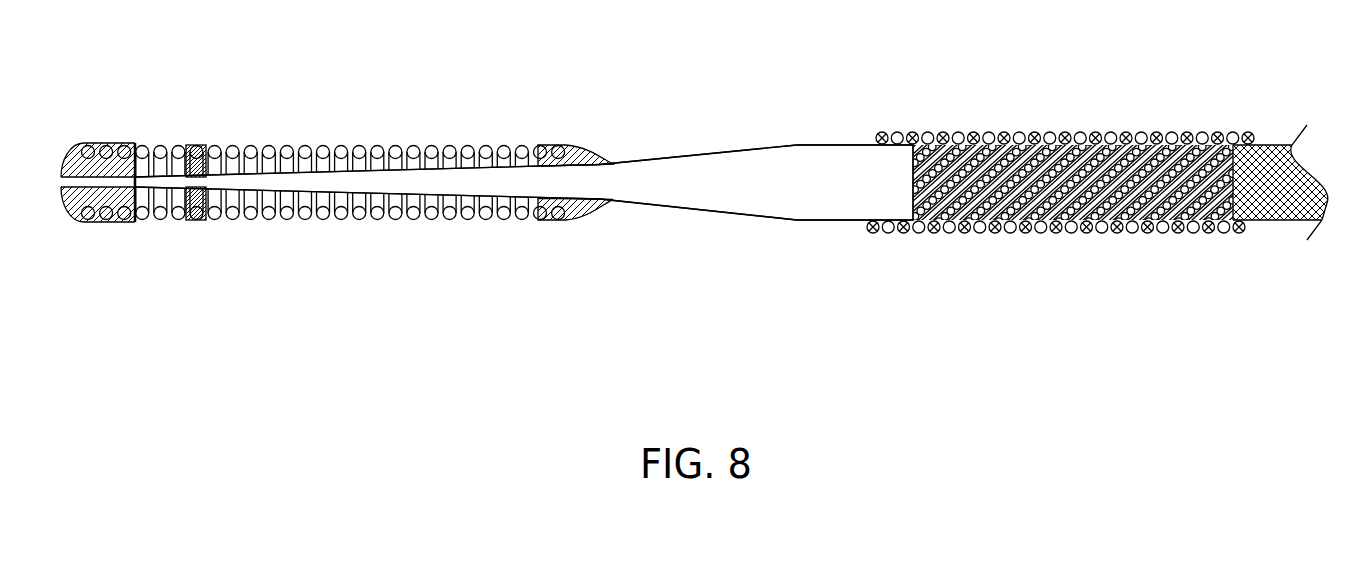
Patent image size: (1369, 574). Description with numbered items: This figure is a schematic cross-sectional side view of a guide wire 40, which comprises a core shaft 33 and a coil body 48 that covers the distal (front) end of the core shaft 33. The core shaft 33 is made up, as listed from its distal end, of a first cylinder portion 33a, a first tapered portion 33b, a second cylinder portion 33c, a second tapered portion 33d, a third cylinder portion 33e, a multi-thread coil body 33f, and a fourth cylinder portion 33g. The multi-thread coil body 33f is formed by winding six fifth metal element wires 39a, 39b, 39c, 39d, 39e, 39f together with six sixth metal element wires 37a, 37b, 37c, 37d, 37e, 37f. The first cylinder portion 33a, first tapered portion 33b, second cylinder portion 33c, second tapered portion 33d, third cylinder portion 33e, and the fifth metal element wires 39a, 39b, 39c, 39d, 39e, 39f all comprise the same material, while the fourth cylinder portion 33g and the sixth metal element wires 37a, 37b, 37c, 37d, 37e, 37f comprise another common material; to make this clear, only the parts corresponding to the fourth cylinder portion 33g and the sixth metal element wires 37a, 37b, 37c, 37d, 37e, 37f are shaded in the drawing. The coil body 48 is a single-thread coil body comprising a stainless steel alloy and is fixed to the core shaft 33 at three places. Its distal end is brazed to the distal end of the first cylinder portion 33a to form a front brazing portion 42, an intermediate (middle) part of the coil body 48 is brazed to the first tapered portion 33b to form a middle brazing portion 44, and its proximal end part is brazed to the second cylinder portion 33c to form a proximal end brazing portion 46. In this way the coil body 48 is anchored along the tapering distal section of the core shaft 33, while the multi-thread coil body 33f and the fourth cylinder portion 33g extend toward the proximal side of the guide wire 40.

The core shaft 33 is at (744, 138).
The first cylinder portion 33a is at (73, 222).
The first tapered portion 33b is at (193, 187).
The second cylinder portion 33c is at (569, 188).
The second tapered portion 33d is at (683, 198).
The third cylinder portion 33e is at (813, 198).
The multi-thread coil body 33f is at (882, 107).
The fourth cylinder portion 33g is at (1277, 137).
The sixth metal element wire 37a is at (1001, 133).
The sixth metal element wire 37b is at (1024, 133).
The sixth metal element wire 37c is at (1067, 133).
The sixth metal element wire 37d is at (1097, 133).
The sixth metal element wire 37e is at (1127, 133).
The sixth metal element wire 37f is at (1155, 133).
The fifth metal element wire 39a is at (917, 233).
The fifth metal element wire 39b is at (943, 233).
The fifth metal element wire 39c is at (972, 233).
The fifth metal element wire 39d is at (1010, 233).
The fifth metal element wire 39e is at (1040, 233).
The fifth metal element wire 39f is at (1077, 233).
The guide wire 40 is at (378, 126).
The front brazing portion 42 is at (82, 150).
The middle brazing portion 44 is at (190, 158).
The proximal end brazing portion 46 is at (568, 158).
The coil body 48 is at (296, 150).